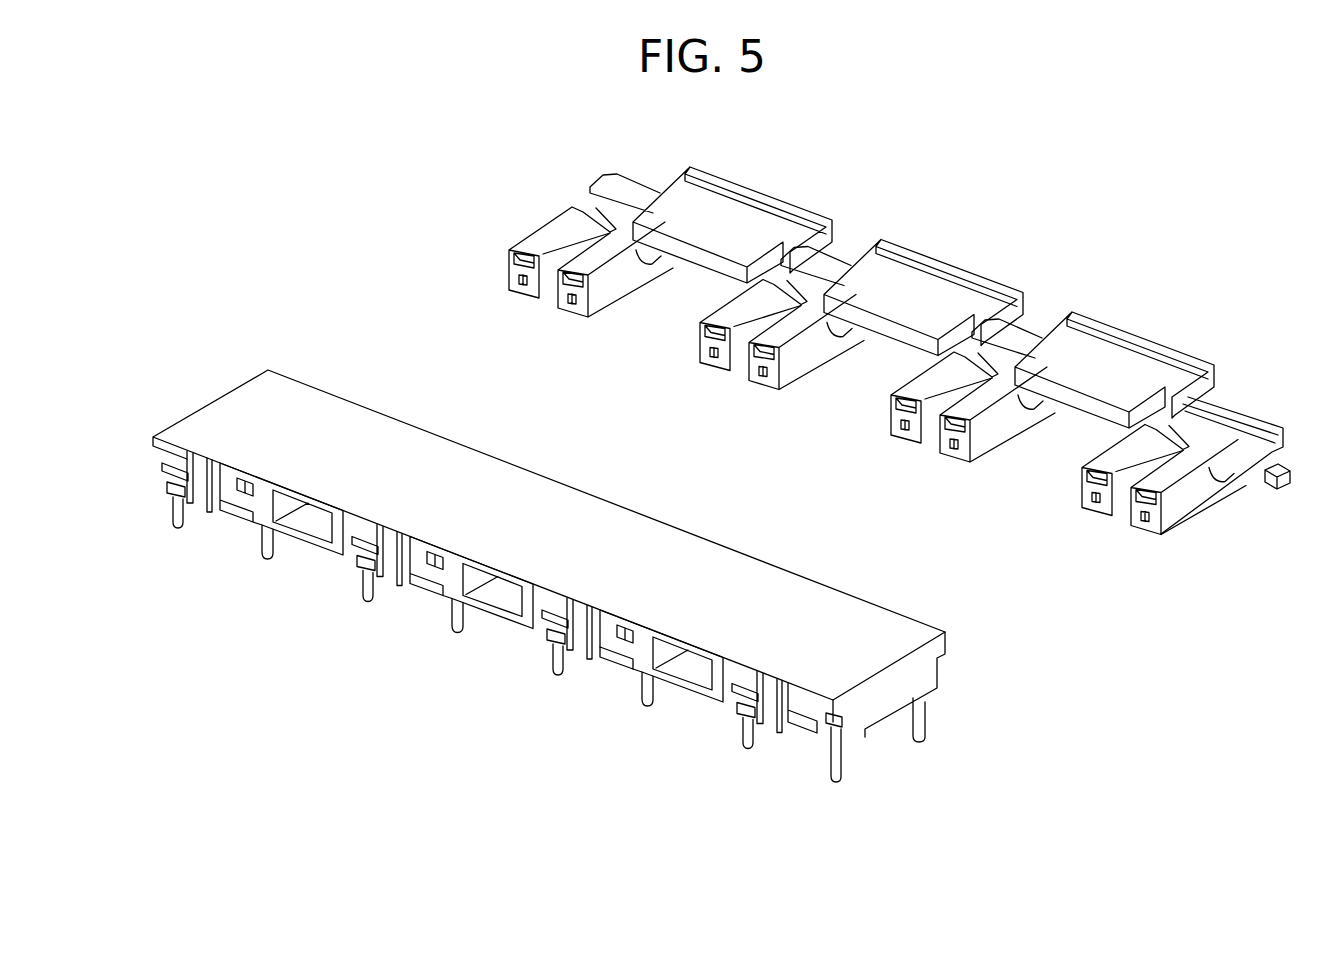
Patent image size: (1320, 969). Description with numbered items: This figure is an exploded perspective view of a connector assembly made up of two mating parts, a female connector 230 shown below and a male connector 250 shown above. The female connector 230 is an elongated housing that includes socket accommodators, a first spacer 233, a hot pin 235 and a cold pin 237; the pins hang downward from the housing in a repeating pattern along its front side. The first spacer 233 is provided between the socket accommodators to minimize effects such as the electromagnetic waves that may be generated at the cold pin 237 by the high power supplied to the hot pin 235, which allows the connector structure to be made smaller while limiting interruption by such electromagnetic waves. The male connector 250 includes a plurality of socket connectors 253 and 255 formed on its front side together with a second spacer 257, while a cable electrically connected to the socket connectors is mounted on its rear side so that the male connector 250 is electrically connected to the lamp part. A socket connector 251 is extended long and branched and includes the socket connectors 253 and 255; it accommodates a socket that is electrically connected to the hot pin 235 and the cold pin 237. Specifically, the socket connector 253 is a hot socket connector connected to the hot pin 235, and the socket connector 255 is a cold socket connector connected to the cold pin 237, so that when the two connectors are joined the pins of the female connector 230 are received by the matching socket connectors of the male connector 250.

The female connector 230 is at (183, 378).
The first spacer 233 is at (494, 618).
The hot pin 235 is at (620, 665).
The cold pin 237 is at (552, 642).
The male connector 250 is at (500, 191).
The socket connector 251 is at (928, 510).
The hot socket connector 253 is at (963, 460).
The cold socket connector 255 is at (902, 442).
The second spacer 257 is at (894, 356).